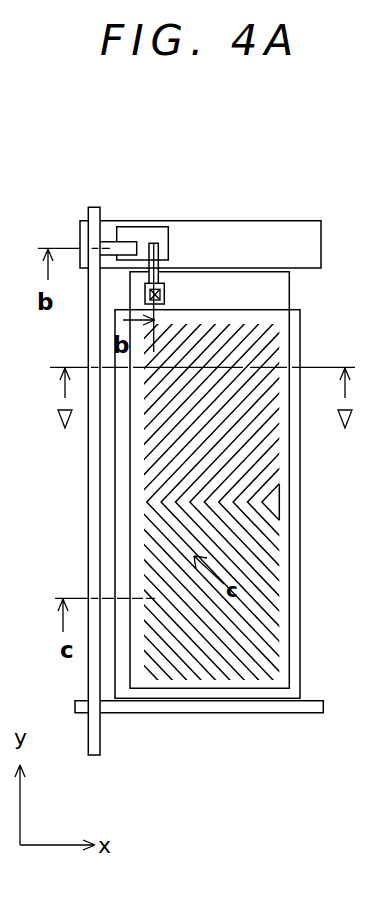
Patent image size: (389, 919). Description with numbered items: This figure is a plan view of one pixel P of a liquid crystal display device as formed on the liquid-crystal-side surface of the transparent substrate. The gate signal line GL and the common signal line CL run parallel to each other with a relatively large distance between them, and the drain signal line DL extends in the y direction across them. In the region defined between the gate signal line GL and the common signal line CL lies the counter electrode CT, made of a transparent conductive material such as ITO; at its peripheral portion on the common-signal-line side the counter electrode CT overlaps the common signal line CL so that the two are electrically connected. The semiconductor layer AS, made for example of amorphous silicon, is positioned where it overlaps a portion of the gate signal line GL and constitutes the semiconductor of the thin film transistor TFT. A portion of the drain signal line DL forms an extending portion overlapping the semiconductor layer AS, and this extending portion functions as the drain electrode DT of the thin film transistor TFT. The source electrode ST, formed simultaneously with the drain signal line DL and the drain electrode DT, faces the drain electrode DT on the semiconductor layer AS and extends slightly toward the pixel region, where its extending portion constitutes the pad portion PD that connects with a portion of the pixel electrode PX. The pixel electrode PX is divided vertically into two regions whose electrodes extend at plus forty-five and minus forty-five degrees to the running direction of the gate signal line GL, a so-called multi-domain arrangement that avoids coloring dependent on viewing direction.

The drain signal line DL is at (88, 478).
The gate signal line GL is at (296, 228).
The drain electrode DT is at (111, 240).
The semiconductor layer AS is at (170, 242).
The thin film transistor TFT is at (136, 203).
The source electrode ST is at (154, 243).
The pad portion PD is at (166, 293).
The pixel electrode PX is at (290, 290).
The counter electrode CT is at (300, 486).
The common signal line CL is at (310, 713).
The pixel P is at (383, 212).